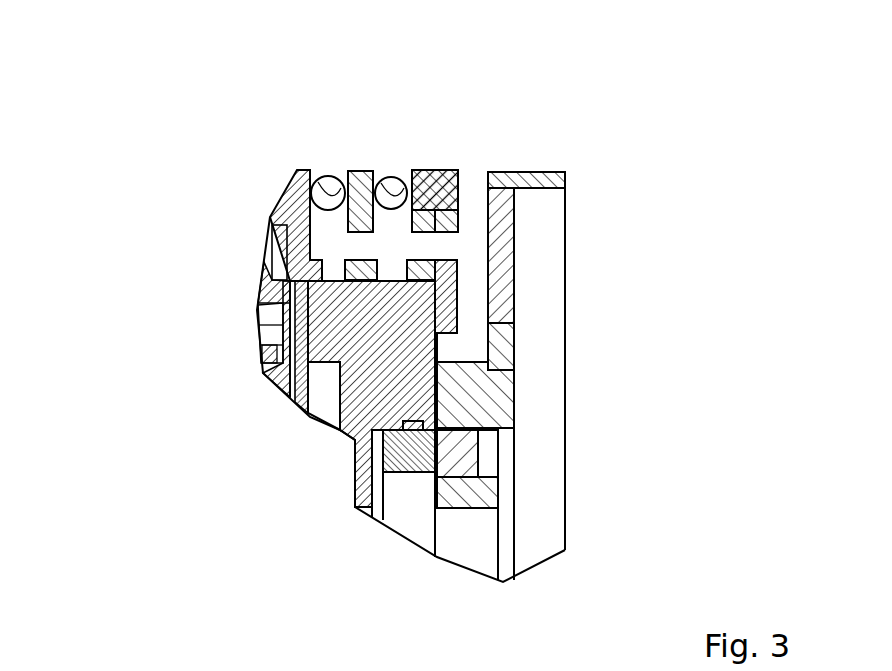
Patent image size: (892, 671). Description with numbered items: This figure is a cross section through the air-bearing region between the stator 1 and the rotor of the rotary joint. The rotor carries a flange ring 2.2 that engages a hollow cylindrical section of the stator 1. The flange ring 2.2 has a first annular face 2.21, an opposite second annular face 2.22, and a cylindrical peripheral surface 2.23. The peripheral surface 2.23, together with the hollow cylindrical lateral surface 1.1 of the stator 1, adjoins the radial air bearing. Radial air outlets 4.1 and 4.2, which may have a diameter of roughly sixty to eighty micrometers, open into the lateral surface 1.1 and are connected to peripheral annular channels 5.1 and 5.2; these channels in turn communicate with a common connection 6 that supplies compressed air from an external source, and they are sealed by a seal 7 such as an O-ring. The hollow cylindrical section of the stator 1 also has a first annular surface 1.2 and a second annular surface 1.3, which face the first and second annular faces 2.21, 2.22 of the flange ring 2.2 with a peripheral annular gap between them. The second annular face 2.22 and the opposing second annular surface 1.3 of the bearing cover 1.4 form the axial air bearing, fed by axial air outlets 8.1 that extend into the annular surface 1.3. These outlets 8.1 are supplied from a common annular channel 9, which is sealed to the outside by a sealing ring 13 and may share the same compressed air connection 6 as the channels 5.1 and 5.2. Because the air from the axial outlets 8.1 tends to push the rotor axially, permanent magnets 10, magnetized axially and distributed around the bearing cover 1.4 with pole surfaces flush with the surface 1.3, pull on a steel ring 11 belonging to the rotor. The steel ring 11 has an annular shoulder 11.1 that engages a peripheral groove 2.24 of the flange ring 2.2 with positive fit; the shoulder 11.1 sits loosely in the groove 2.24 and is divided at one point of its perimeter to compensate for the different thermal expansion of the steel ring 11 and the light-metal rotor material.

The stator 1 is at (277, 188).
The hollow cylindrical lateral surface 1.1 is at (292, 276).
The first annular surface 1.2 is at (283, 303).
The second annular surface 1.3 is at (445, 298).
The bearing cover 1.4 is at (515, 227).
The flange ring 2.2 is at (413, 387).
The first annular face 2.21 is at (265, 377).
The second annular face 2.22 is at (288, 303).
The cylindrical peripheral surface 2.23 is at (430, 320).
The peripheral groove 2.24 is at (402, 411).
The radial air outlet 4.1 is at (333, 277).
The radial air outlet 4.2 is at (390, 277).
The peripheral annular channel 5.1 is at (300, 235).
The peripheral annular channel 5.2 is at (388, 240).
The common connection 6 is at (475, 198).
The seal 7 is at (320, 162).
The axial air outlet 8.1 is at (522, 377).
The annular channel 9 is at (445, 348).
The permanent magnet 10 is at (463, 453).
The steel ring 11 is at (400, 410).
The annular shoulder 11.1 is at (417, 423).
The sealing ring 13 is at (503, 360).